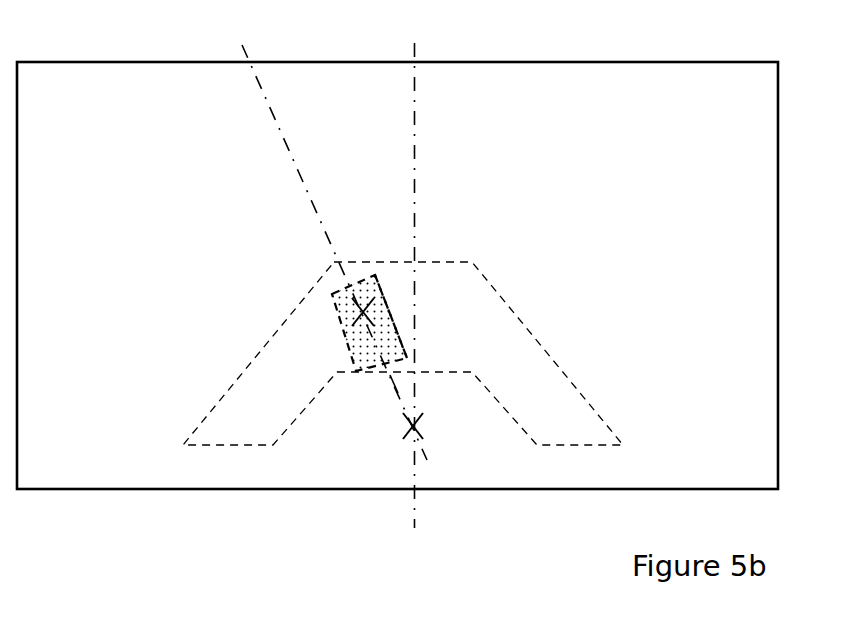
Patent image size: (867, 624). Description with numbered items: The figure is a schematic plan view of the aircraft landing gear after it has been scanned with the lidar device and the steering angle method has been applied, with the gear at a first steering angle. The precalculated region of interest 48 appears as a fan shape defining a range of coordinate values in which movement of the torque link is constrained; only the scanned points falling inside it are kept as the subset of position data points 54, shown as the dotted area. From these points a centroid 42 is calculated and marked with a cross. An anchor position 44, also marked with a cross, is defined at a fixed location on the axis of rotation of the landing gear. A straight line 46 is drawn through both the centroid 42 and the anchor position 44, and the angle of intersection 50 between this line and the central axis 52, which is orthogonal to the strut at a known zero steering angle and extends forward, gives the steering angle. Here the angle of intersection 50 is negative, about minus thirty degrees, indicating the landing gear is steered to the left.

The centroid 42 is at (363, 314).
The anchor position 44 is at (422, 427).
The straight line 46 is at (288, 146).
The region of interest 48 is at (577, 385).
The angle of intersection 50 is at (400, 384).
The central axis 52 is at (414, 197).
The subset of position data points 54 is at (393, 328).